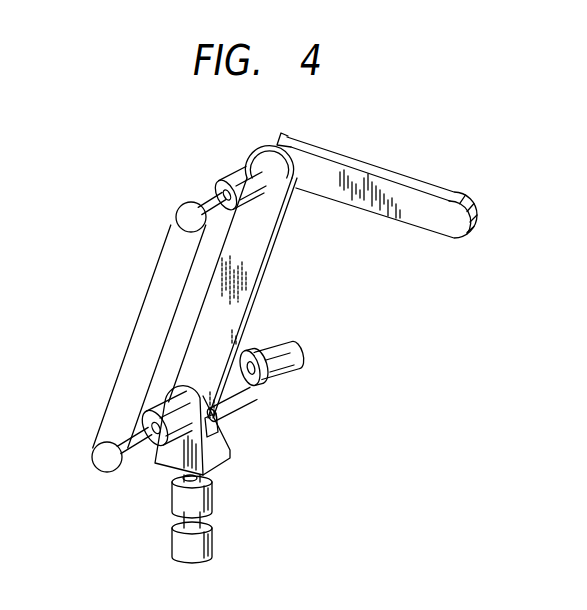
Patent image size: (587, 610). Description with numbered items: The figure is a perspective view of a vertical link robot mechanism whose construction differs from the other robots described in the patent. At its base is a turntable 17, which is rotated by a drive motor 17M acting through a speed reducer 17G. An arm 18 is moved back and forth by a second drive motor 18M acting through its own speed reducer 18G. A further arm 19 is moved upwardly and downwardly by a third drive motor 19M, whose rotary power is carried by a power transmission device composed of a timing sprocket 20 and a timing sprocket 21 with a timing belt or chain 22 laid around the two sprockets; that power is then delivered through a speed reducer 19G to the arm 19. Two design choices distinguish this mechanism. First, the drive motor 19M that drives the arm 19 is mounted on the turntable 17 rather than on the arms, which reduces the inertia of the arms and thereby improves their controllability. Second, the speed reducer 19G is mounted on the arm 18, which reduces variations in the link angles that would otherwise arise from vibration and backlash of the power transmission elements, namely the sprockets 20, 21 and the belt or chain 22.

The turntable 17 is at (223, 448).
The speed reducer 17G is at (210, 500).
The drive motor 17M is at (208, 550).
The arm 18 is at (252, 250).
The speed reducer 18G is at (247, 389).
The drive motor 18M is at (287, 350).
The arm 19 is at (400, 190).
The speed reducer 19G is at (247, 168).
The drive motor 19M is at (175, 458).
The timing sprocket 20 is at (95, 468).
The timing sprocket 21 is at (183, 208).
The timing belt or chain 22 is at (142, 308).